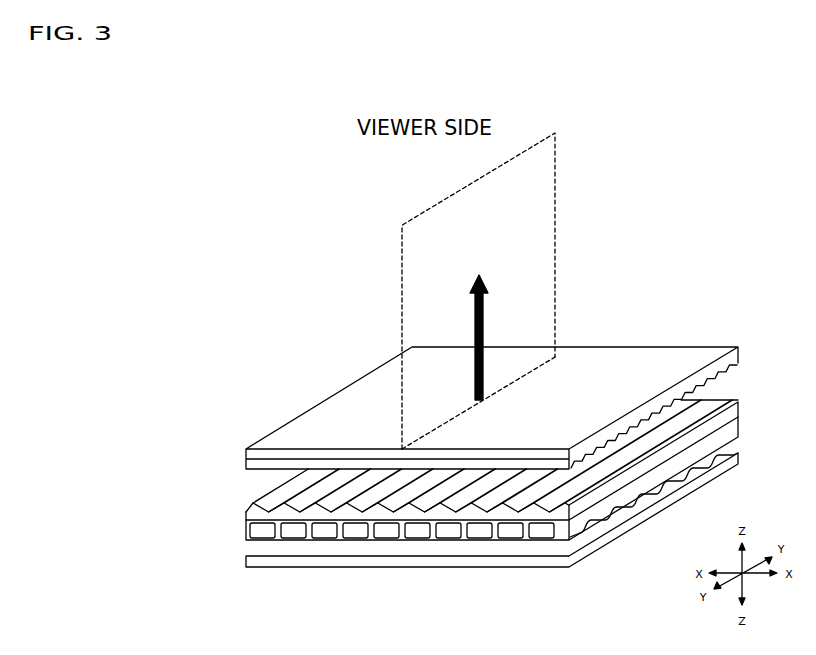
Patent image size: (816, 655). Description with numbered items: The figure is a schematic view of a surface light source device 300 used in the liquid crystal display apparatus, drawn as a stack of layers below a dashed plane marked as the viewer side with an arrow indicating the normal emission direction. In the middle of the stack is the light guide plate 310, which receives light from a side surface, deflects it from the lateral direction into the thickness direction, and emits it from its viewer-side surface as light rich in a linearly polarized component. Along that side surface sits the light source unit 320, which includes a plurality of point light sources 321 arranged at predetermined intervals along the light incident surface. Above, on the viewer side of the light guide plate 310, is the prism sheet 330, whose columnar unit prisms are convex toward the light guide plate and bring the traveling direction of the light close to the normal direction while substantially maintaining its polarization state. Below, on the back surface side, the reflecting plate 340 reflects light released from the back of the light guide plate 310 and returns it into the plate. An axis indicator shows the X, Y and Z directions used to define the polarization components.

The surface light source device 300 is at (253, 318).
The prism sheet 330 is at (245, 455).
The light guide plate 310 is at (245, 521).
The light source unit 320 is at (245, 537).
The point light source 321 is at (322, 534).
The reflecting plate 340 is at (245, 558).